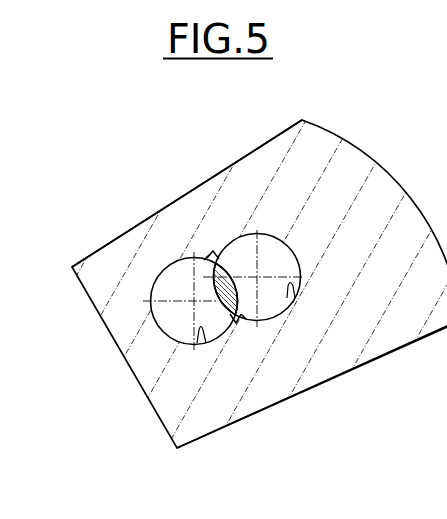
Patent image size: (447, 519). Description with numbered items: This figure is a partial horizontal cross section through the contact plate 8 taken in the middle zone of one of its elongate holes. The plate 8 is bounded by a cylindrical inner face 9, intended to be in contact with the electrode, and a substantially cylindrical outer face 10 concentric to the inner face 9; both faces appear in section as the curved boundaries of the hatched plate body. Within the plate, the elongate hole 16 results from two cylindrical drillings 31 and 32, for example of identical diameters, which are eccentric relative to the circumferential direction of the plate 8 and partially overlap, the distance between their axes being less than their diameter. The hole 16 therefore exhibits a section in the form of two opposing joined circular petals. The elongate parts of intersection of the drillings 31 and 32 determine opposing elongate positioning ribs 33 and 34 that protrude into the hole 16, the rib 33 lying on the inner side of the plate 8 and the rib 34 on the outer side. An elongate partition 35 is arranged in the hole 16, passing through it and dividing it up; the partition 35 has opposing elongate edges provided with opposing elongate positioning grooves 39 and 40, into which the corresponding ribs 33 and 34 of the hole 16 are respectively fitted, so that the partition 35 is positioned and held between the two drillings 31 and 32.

The contact plate 8 is at (322, 138).
The cylindrical inner face 9 is at (395, 349).
The cylindrical outer face 10 is at (253, 151).
The elongate hole 16 is at (165, 312).
The cylindrical drilling 31 is at (201, 345).
The cylindrical drilling 32 is at (294, 287).
The elongate positioning rib 33 is at (245, 318).
The elongate positioning rib 34 is at (213, 252).
The elongate partition 35 is at (232, 313).
The elongate positioning groove 39 is at (236, 323).
The elongate positioning groove 40 is at (206, 256).